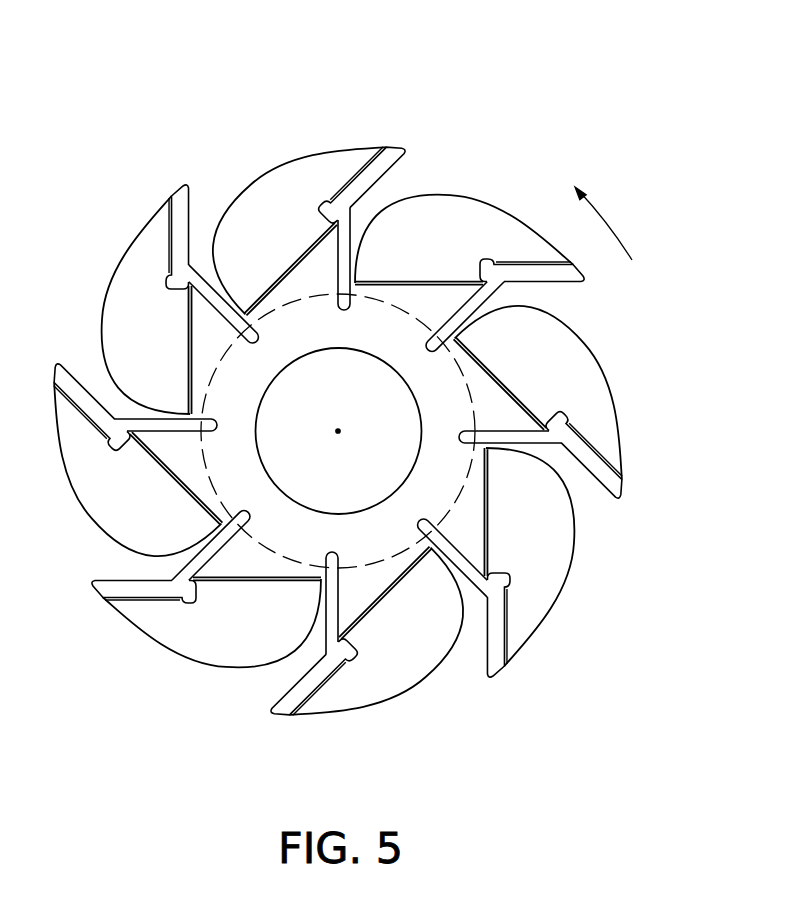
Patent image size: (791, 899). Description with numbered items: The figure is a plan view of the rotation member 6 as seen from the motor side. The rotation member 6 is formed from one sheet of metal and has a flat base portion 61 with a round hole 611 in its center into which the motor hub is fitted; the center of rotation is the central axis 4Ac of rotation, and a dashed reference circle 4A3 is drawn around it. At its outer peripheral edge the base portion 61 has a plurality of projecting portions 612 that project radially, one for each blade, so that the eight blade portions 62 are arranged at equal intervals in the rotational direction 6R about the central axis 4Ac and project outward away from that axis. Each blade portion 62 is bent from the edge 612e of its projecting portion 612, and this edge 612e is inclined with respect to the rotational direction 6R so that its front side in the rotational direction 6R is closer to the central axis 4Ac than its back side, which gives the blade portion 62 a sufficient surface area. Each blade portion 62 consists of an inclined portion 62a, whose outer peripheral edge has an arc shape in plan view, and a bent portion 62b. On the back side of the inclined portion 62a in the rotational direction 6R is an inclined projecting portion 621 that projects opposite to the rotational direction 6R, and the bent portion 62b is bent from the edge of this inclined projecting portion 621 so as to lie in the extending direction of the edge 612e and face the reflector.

The rotation member 6 is at (611, 102).
The rotational direction 6R is at (614, 223).
The base portion 61 is at (339, 428).
The round hole 611 is at (402, 380).
The projecting portion 612 is at (330, 266).
The edge 612e is at (253, 291).
The blade portion 62 is at (400, 58).
The inclined portion 62a is at (313, 178).
The bent portion 62b is at (390, 152).
The inclined projecting portion 621 is at (348, 163).
The central axis of rotation 4Ac is at (336, 436).
The reference circle 4A3 is at (446, 517).